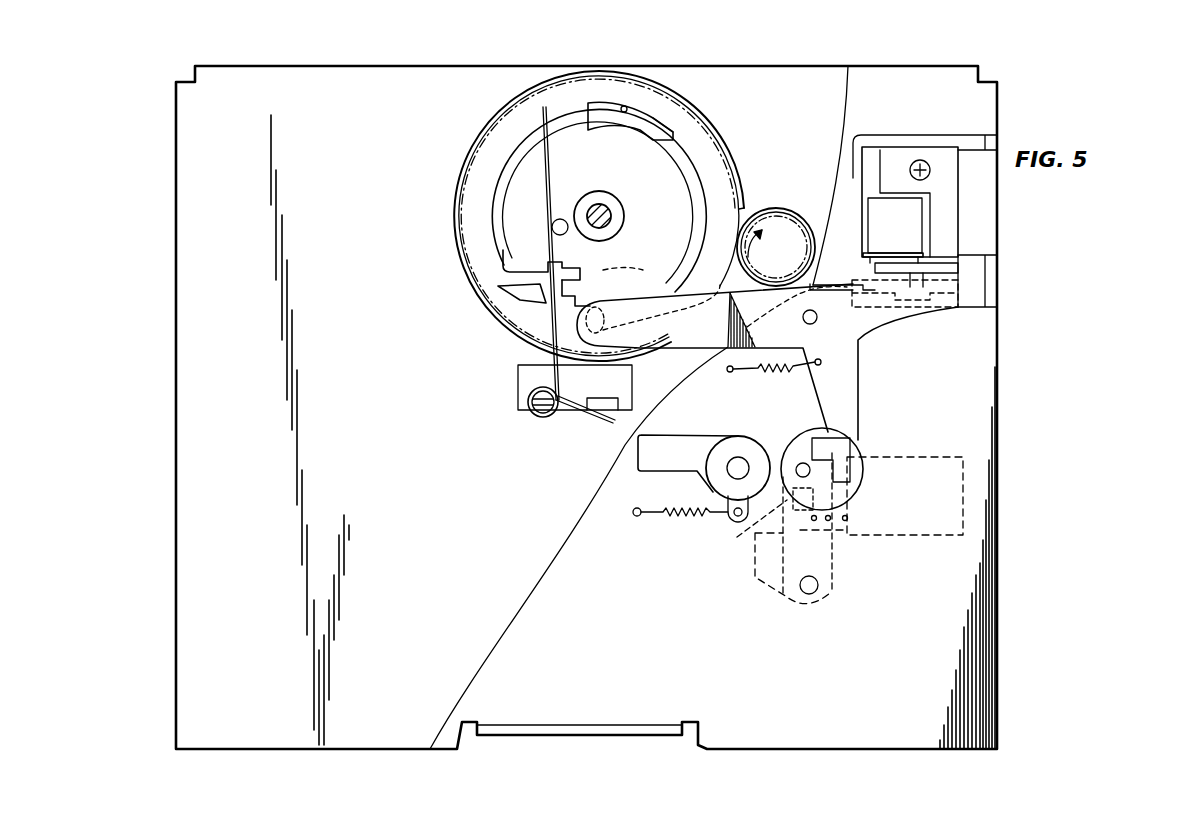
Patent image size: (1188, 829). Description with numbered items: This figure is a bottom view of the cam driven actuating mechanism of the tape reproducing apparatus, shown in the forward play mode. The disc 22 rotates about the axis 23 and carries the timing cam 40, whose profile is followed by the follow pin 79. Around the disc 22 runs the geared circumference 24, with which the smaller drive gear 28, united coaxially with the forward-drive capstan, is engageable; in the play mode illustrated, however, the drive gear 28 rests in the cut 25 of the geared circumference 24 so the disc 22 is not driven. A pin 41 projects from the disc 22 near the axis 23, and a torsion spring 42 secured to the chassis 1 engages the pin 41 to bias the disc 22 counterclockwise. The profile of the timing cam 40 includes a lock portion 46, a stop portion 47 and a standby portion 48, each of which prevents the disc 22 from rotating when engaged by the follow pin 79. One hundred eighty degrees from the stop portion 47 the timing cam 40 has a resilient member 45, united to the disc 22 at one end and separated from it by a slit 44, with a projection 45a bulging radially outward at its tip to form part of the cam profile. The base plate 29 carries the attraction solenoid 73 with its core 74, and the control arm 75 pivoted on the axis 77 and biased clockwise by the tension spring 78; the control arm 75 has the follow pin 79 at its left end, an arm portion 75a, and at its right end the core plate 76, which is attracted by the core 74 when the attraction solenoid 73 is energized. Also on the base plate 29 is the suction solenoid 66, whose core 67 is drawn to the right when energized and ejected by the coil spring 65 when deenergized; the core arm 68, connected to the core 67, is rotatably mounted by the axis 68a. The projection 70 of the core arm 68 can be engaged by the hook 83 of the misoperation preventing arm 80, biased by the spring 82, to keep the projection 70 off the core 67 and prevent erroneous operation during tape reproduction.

The chassis 1 is at (436, 68).
The disc 22 is at (700, 126).
The axis 23 is at (606, 205).
The geared circumference 24 is at (731, 152).
The cut 25 is at (710, 262).
The drive gear 28 is at (778, 209).
The base plate 29 is at (997, 418).
The timing cam 40 is at (492, 194).
The pin 41 is at (566, 218).
The torsion spring 42 is at (545, 152).
The slit 44 is at (628, 108).
The resilient member 45 is at (606, 103).
The projection 45a is at (663, 125).
The lock portion 46 is at (598, 300).
The stop portion 47 is at (578, 272).
The standby portion 48 is at (525, 292).
The coil spring 65 is at (850, 545).
The suction solenoid 66 is at (905, 453).
The core 67 is at (745, 532).
The core arm 68 is at (832, 592).
The axis 68a is at (809, 595).
The projection 70 is at (800, 458).
The attraction solenoid 73 is at (922, 225).
The core 74 is at (875, 255).
The control arm 75 is at (687, 348).
The lever arm 75a is at (862, 412).
The core plate 76 is at (962, 266).
The axis 77 is at (803, 321).
The tension spring 78 is at (760, 372).
The follow pin 79 is at (618, 312).
The misoperation preventing arm 80 is at (700, 435).
The spring 82 is at (686, 505).
The hook 83 is at (820, 440).